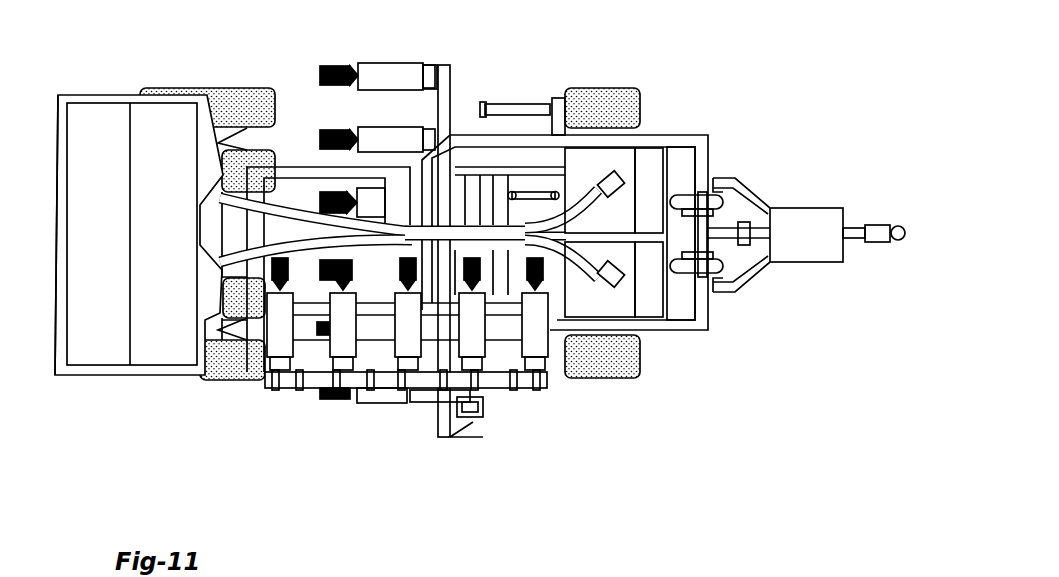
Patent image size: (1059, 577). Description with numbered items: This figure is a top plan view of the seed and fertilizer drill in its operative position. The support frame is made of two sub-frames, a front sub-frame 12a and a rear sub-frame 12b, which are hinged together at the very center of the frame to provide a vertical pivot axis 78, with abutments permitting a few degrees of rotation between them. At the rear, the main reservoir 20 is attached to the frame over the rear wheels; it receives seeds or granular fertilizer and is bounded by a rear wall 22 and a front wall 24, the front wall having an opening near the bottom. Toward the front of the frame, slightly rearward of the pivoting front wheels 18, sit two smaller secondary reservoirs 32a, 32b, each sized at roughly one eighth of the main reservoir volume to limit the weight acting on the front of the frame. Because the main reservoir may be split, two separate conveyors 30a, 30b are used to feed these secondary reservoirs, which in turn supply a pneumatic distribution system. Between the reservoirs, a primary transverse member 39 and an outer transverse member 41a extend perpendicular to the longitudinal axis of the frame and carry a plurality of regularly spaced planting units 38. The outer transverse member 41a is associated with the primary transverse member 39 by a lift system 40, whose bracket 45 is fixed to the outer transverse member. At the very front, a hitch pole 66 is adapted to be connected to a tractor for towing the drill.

The front sub-frame 12a is at (498, 126).
The rear sub-frame 12b is at (298, 165).
The front wheels 18 is at (588, 95).
The main reservoir 20 is at (121, 376).
The rear wall 22 is at (55, 340).
The front wall 24 is at (217, 372).
The conveyor 30a is at (593, 280).
The conveyor 30b is at (598, 190).
The secondary reservoir 32a is at (653, 298).
The secondary reservoir 32b is at (657, 167).
The planting units 38 is at (410, 140).
The primary transverse member 39 is at (456, 100).
The lift system 40 is at (477, 424).
The outer transverse member 41a is at (377, 385).
The bracket 45 is at (435, 394).
The hitch pole 66 is at (755, 284).
The vertical pivot axis 78 is at (402, 228).